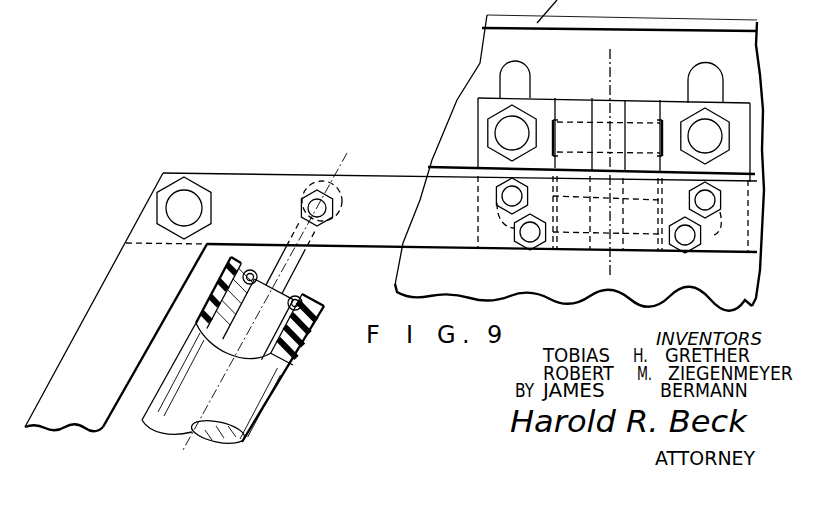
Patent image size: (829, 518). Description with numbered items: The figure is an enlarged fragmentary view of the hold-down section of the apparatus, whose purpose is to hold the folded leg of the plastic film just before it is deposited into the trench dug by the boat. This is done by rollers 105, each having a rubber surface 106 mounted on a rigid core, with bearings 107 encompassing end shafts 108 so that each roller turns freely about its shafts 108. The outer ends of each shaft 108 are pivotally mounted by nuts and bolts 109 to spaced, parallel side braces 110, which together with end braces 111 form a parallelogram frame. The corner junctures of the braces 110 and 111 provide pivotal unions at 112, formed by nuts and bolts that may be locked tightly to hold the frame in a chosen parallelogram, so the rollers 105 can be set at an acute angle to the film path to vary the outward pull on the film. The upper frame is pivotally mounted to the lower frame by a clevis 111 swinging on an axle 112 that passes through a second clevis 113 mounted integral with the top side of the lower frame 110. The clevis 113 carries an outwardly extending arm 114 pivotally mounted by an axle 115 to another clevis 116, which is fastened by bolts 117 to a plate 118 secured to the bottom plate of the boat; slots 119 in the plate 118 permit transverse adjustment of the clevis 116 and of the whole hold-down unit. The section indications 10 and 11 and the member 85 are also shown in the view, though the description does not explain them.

The section line 10- 10 is at (372, 163).
The section line 11- 11 is at (636, 49).
The door frame member 85 is at (548, 11).
The rollers 105 is at (297, 345).
The rubber surface 106 is at (320, 308).
The bearings 107 is at (303, 300).
The end shafts 108 is at (309, 289).
The nuts and bolts 109 is at (332, 212).
The side braces 110 is at (443, 232).
The end braces 111 is at (562, 250).
The pivotal unions 112 is at (641, 234).
The second clevis 113 is at (600, 255).
The outwardly extending arm 114 is at (617, 107).
The axle 115 is at (667, 122).
The clevis 116 is at (643, 110).
The bolts 117 is at (490, 123).
The plate 118 is at (486, 61).
The slots 119 is at (524, 80).